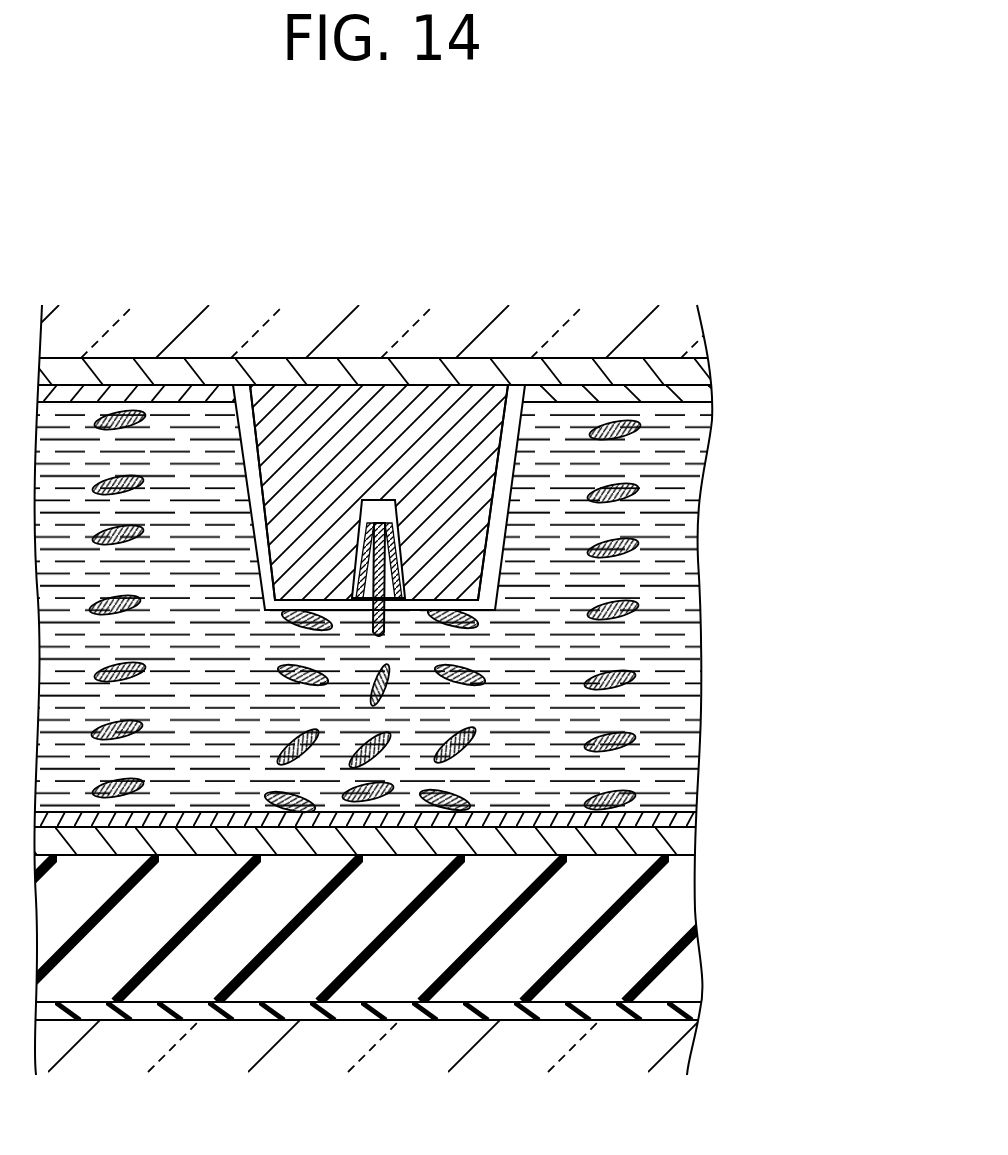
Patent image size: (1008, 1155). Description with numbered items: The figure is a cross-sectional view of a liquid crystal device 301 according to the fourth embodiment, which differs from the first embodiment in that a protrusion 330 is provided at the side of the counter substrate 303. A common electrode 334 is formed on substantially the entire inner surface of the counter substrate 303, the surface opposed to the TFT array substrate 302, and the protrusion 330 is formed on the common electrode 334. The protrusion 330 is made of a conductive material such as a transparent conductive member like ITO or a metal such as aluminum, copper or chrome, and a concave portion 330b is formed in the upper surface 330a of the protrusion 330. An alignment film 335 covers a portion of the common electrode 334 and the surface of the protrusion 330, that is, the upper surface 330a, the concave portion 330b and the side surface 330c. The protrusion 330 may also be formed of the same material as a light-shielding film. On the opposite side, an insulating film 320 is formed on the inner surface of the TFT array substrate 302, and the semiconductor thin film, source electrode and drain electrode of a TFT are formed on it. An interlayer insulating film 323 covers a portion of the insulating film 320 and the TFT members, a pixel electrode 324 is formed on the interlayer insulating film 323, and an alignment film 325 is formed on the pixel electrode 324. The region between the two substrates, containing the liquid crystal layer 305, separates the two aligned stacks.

The liquid crystal device 301 is at (712, 253).
The TFT array substrate 302 is at (663, 1042).
The counter substrate 303 is at (688, 333).
The anisotropic conductive film 305 is at (677, 482).
The insulating film 320 is at (690, 1010).
The interlayer insulating film 323 is at (677, 922).
The pixel electrode 324 is at (680, 838).
The alignment film 325 is at (703, 823).
The protrusion 330 is at (463, 535).
The upper surface 330a is at (440, 604).
The concave portion 330b is at (390, 622).
The side surface 330c is at (235, 455).
The common electrode 334 is at (688, 372).
The alignment film 335 is at (683, 393).